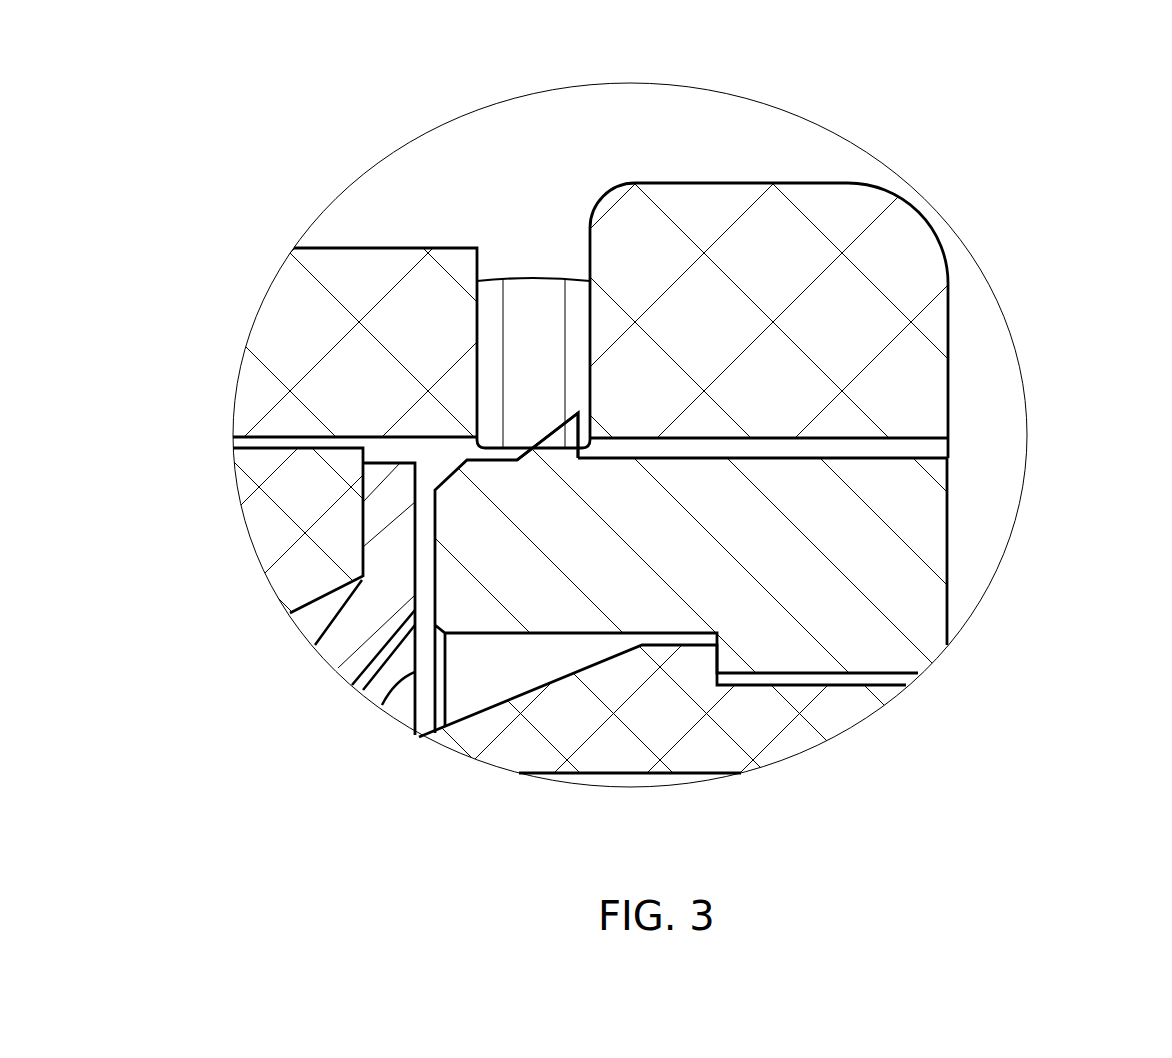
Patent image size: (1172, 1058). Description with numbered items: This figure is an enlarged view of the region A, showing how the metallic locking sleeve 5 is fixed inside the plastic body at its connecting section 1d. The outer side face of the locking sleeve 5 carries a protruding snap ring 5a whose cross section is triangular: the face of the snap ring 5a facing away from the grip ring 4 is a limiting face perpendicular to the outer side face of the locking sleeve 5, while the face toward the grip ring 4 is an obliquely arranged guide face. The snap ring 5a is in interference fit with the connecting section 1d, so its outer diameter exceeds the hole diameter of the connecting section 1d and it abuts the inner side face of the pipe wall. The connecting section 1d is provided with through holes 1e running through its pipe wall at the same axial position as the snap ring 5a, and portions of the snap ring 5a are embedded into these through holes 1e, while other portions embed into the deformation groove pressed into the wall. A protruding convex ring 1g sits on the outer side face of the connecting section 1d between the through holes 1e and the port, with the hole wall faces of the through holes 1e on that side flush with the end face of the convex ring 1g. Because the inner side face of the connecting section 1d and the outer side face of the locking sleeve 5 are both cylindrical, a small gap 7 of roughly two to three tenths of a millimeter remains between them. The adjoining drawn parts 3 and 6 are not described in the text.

The connecting section 1d is at (435, 353).
The through holes 1e is at (533, 307).
The convex ring 1g is at (717, 202).
The snap ring 5a is at (560, 437).
The enlarged region A is at (956, 221).
The gap 7 is at (946, 449).
The locking sleeve 5 is at (898, 558).
The lower member 6 is at (780, 718).
The side member 3 is at (297, 510).
The grip ring 4 is at (382, 535).